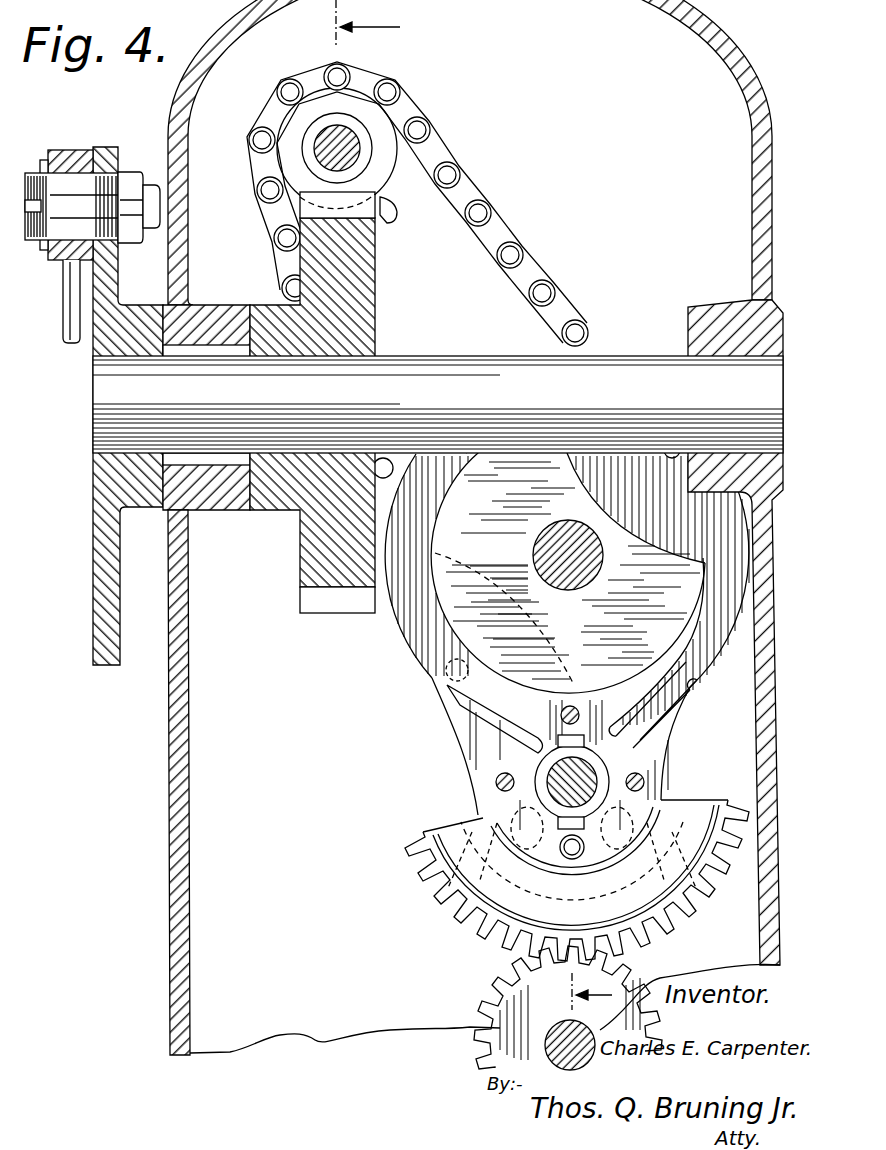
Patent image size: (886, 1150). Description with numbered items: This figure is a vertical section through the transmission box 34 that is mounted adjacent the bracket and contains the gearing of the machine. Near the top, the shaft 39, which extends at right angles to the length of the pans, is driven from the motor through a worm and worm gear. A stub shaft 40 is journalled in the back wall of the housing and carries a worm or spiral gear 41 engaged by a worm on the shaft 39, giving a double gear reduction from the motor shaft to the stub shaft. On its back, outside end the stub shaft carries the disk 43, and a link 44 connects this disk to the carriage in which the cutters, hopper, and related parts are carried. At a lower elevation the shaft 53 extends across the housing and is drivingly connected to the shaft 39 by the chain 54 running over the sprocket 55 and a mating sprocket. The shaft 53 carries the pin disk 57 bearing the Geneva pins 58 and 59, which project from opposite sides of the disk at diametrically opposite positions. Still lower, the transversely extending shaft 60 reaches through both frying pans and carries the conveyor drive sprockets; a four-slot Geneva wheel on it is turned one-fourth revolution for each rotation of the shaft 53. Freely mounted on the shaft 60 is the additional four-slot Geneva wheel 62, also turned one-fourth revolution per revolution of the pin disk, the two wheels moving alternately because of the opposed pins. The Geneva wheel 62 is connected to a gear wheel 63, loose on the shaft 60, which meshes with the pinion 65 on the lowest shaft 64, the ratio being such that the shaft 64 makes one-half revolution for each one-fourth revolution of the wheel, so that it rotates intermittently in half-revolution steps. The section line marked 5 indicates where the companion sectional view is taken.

The transmission box 34 is at (178, 755).
The shaft 39 is at (328, 152).
The stub shaft 40 is at (428, 378).
The worm or spiral gear 41 is at (357, 292).
The disk 43 is at (104, 546).
The link 44 is at (71, 318).
The shaft 53 is at (552, 543).
The chain 54 is at (497, 233).
The sprocket 55 is at (387, 209).
The pin disk 57 is at (417, 635).
The Geneva pin 58 is at (672, 456).
The Geneva pin 59 is at (447, 672).
The shaft 60 is at (567, 780).
The Geneva wheel 62 is at (500, 760).
The gear wheel 63 is at (577, 880).
The shaft 64 is at (545, 1052).
The pinion 65 is at (530, 996).
The section line 5- 5 is at (474, 513).